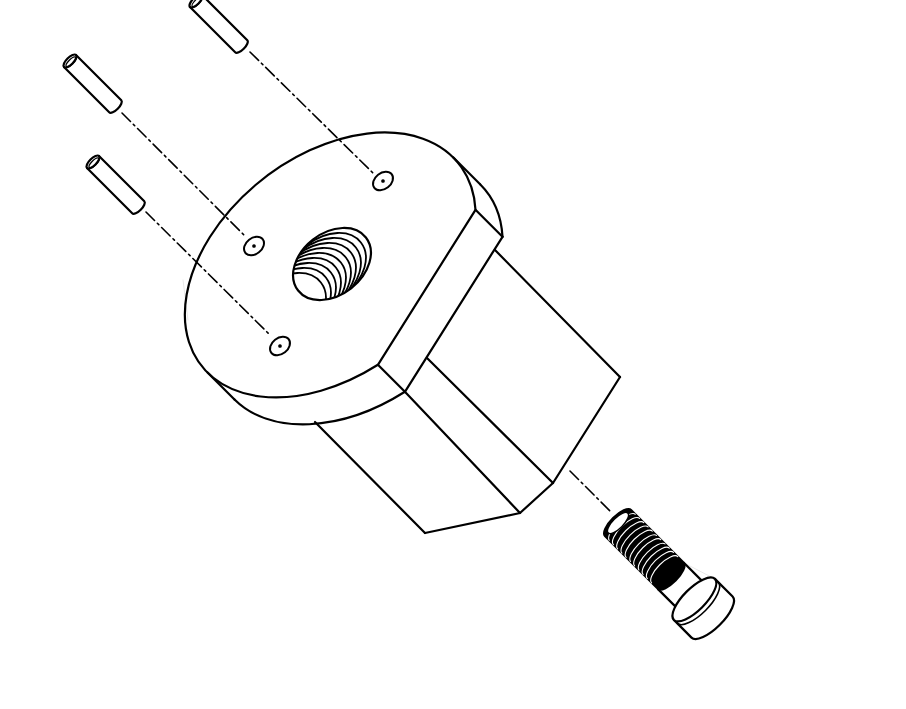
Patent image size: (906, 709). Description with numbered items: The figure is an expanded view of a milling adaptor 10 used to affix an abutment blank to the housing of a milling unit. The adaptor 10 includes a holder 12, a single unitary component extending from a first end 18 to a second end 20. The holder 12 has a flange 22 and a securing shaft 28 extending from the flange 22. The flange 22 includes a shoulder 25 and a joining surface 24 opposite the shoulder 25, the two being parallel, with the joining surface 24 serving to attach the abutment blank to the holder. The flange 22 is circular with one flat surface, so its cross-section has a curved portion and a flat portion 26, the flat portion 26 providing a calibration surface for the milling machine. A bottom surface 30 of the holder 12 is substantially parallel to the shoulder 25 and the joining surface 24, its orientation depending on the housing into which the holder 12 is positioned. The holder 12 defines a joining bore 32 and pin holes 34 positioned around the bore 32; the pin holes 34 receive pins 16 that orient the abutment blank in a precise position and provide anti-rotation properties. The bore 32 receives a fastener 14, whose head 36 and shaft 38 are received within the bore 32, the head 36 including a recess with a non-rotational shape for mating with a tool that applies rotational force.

The milling adaptor 10 is at (541, 94).
The holder 12 is at (218, 450).
The fastener 14 is at (710, 508).
The pins 16 is at (108, 193).
The first end 18 is at (174, 278).
The second end 20 is at (631, 344).
The flange 22 is at (250, 400).
The joining surface 24 is at (417, 157).
The shoulder 25 is at (473, 293).
The flat portion 26 is at (484, 234).
The securing shaft 28 is at (563, 316).
The bottom surface 30 is at (605, 403).
The joining bore 32 is at (317, 262).
The pin holes 34 is at (386, 174).
The head 36 is at (683, 637).
The shaft 38 is at (628, 557).